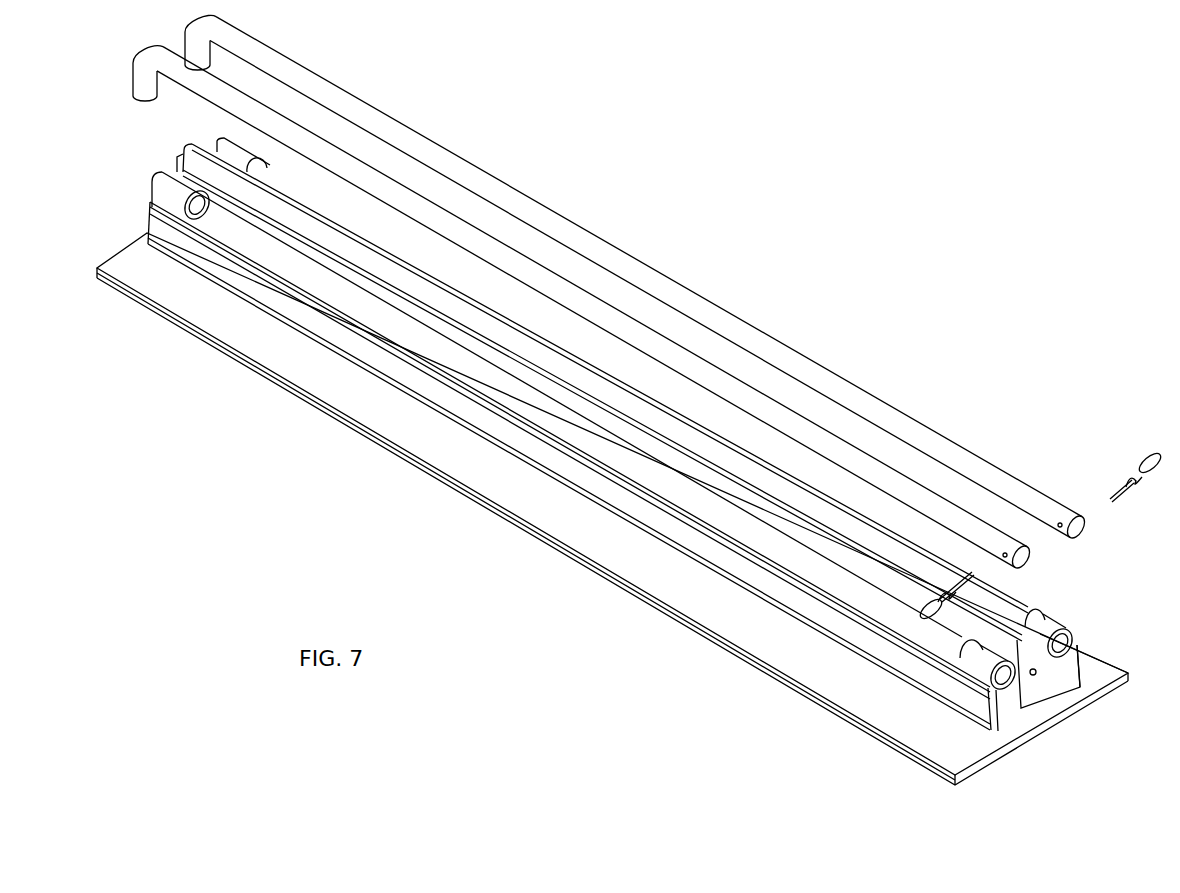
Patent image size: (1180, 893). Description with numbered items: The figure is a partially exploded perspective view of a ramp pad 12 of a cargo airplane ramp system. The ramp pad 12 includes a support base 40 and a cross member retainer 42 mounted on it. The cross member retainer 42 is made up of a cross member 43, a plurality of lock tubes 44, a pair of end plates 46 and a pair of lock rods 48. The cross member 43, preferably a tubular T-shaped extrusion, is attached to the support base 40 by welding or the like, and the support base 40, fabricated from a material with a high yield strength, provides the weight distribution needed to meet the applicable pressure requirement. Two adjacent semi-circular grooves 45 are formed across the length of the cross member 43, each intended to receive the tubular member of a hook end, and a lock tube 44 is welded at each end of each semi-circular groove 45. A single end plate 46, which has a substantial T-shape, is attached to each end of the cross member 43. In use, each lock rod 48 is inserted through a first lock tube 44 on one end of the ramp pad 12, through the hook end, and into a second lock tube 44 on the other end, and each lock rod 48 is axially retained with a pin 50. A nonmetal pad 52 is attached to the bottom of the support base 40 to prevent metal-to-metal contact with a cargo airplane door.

The ramp pad 12 is at (850, 212).
The support base 40 is at (680, 590).
The cross member retainer 42 is at (447, 447).
The cross member 43 is at (782, 592).
The lock tube 44 is at (172, 200).
The semi-circular groove 45 is at (332, 287).
The end plate 46 is at (1043, 683).
The lock rod 48 is at (528, 193).
The pin 50 is at (1128, 480).
The nonmetal pad 52 is at (557, 548).